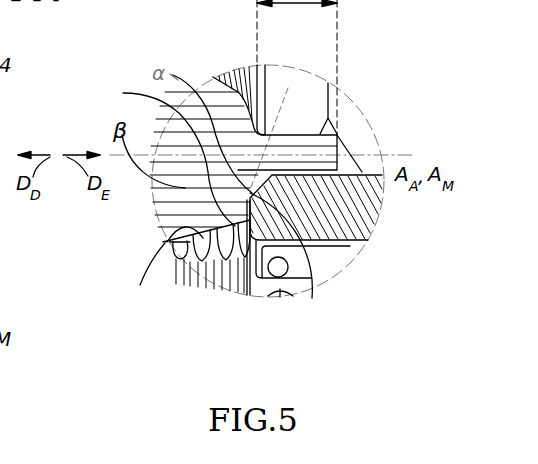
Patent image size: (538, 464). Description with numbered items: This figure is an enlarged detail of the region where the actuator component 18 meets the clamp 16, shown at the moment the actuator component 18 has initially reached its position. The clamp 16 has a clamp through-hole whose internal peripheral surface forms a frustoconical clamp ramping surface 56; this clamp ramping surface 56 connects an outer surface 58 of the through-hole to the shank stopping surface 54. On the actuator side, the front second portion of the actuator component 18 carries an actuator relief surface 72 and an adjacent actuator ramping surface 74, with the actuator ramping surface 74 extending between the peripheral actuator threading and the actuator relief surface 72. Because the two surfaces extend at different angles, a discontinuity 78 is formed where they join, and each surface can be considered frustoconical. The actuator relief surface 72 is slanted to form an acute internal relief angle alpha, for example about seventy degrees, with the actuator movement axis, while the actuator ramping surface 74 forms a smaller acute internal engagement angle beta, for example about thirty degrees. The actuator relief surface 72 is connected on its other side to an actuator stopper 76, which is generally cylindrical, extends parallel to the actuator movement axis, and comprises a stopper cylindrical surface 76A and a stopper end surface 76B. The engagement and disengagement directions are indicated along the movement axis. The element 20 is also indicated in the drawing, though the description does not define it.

The clamp 16 is at (388, 213).
The actuator component 18 is at (146, 205).
The bottom feature 20 is at (279, 300).
The shank stopping surface 54 is at (338, 177).
The clamp ramping surface 56 is at (285, 248).
The outer surface 58 is at (312, 298).
The actuator relief surface 72 is at (215, 155).
The actuator ramping surface 74 is at (178, 263).
The actuator stopper 76 is at (287, 133).
The stopper cylindrical surface 76A is at (302, 118).
The stopper end surface 76B is at (331, 175).
The discontinuity 78 is at (250, 258).